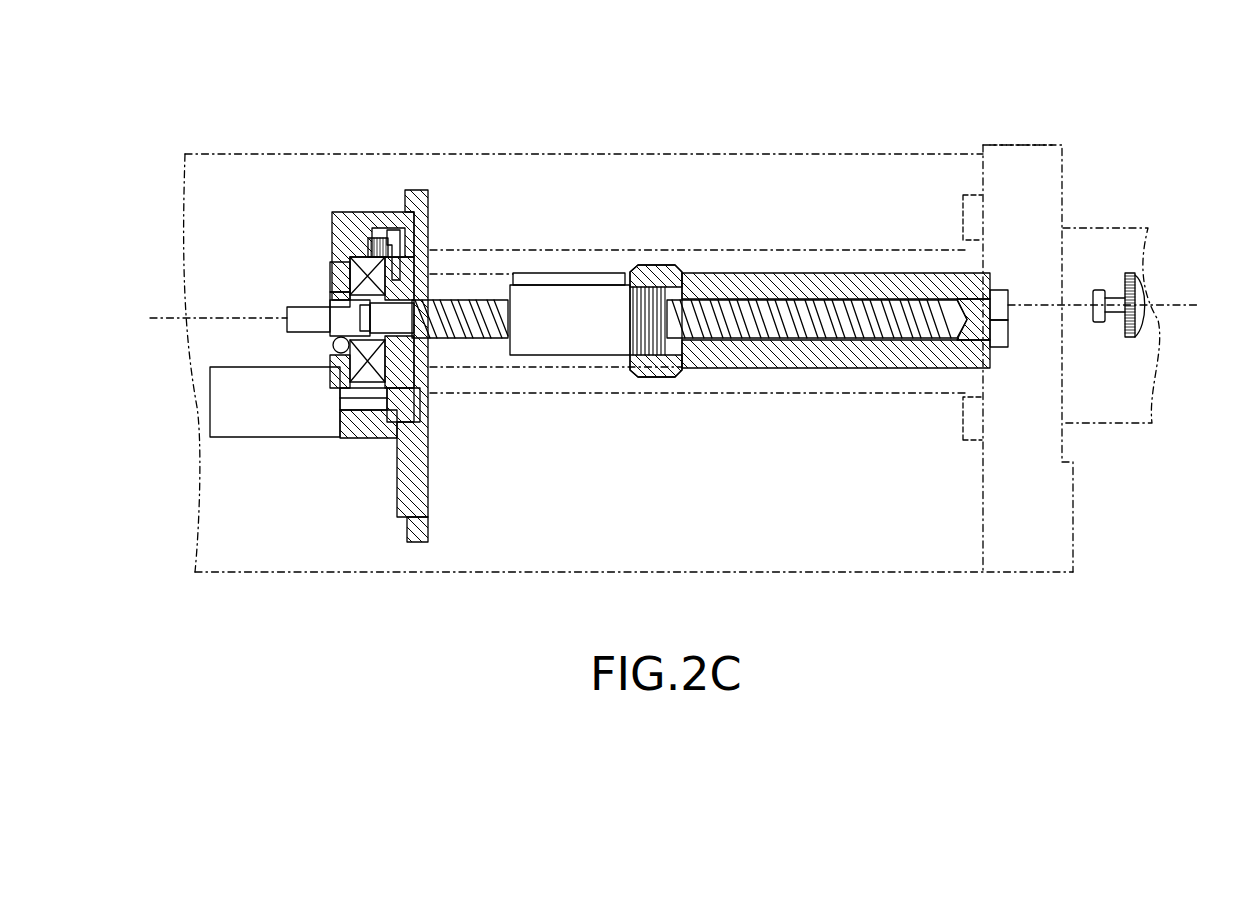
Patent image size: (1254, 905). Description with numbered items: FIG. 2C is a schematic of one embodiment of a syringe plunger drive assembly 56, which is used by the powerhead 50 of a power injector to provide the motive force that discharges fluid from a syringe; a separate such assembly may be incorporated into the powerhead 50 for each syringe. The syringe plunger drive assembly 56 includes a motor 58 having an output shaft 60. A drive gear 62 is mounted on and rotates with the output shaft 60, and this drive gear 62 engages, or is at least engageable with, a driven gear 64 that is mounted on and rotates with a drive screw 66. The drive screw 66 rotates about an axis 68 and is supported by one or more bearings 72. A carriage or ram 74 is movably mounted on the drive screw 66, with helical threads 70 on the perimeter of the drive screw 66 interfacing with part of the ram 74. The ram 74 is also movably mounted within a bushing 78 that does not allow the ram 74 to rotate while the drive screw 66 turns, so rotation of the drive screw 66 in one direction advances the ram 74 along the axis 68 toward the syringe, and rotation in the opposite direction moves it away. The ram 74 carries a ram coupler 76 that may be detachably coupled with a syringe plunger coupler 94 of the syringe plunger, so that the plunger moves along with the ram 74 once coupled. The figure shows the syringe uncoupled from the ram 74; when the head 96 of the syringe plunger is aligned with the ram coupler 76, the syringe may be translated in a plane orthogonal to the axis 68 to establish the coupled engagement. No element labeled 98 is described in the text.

The powerhead 50 is at (875, 153).
The syringe plunger drive assembly 56 is at (576, 213).
The motor 58 is at (282, 414).
The output shaft 60 is at (360, 403).
The drive gear 62 is at (420, 405).
The driven gear 64 is at (407, 260).
The drive screw 66 is at (465, 297).
The axis 68 is at (243, 320).
The helical threads 70 is at (765, 328).
The bearings 72 is at (357, 257).
The ram 74 is at (748, 273).
The ram coupler 76 is at (998, 347).
The bushing 78 is at (608, 250).
The syringe plunger coupler 94 is at (1114, 280).
The head 96 is at (1098, 322).
The pin stem 98 is at (1117, 318).